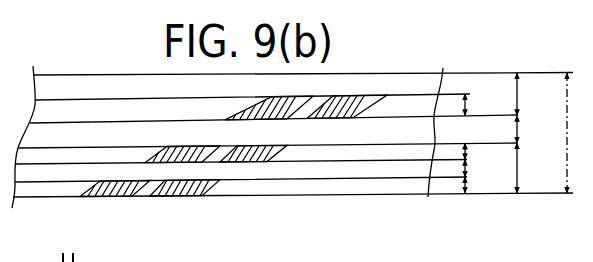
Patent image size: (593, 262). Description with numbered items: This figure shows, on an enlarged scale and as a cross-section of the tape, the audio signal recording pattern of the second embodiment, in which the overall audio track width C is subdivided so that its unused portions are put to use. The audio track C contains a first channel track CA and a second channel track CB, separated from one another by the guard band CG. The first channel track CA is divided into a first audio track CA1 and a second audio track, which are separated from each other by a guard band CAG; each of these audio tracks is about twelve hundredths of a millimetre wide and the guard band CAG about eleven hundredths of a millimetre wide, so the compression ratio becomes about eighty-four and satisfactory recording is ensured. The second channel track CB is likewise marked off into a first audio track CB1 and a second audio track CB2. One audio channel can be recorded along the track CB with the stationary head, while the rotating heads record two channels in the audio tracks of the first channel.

The first audio track of second channel CB1 is at (486, 107).
The width of the second channel CB is at (534, 94).
The width of the guard band between the first and second channels CG is at (535, 131).
The width of the first channel track CA is at (534, 168).
The width of the audio track C is at (566, 133).
The second audio track of second channel CB2 is at (488, 155).
The guard band CAG is at (446, 171).
The first audio track CA1 is at (486, 183).